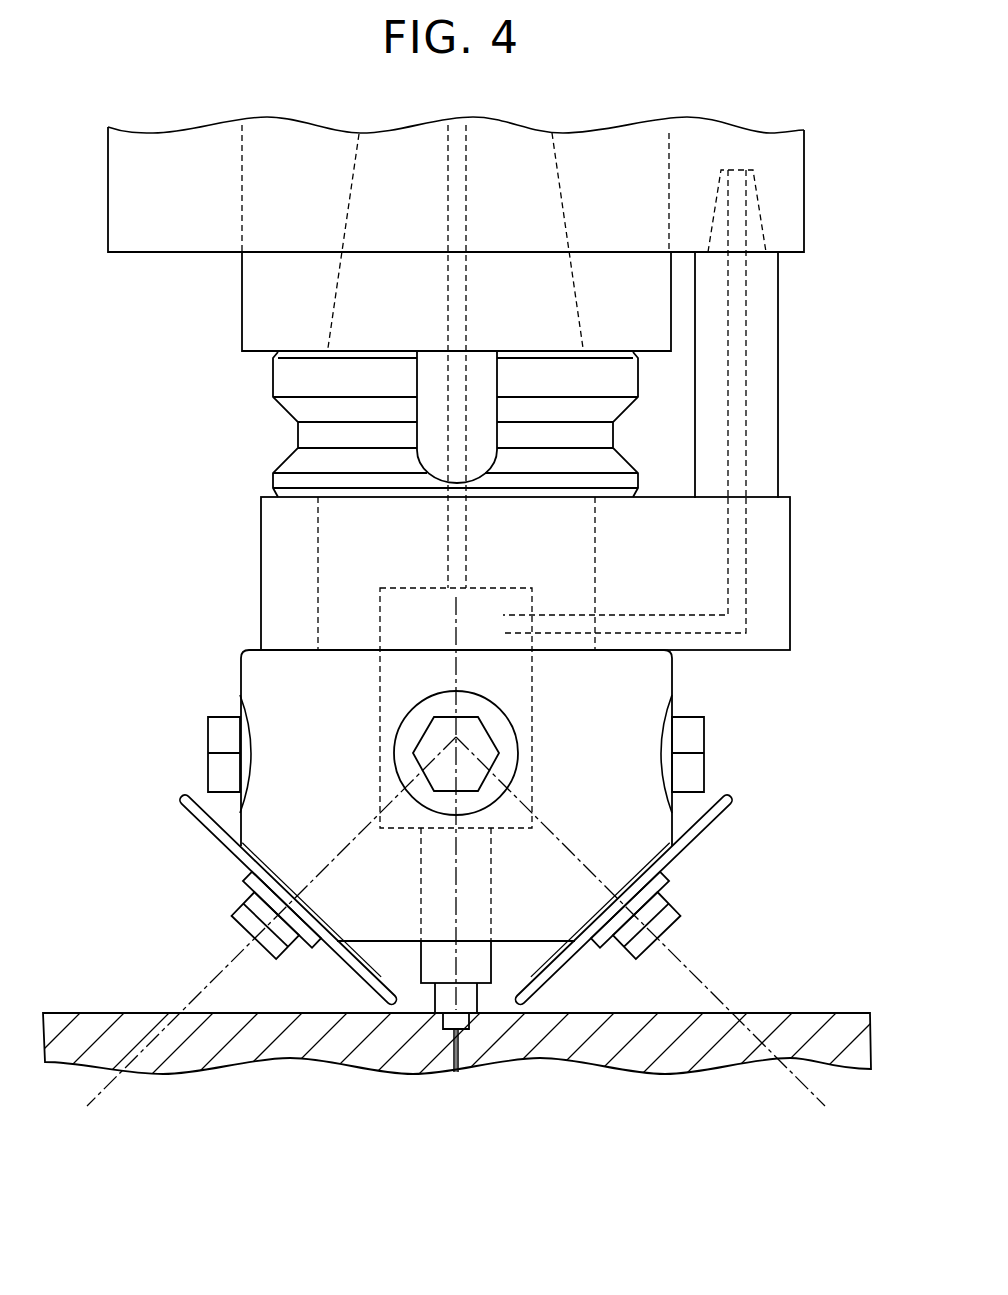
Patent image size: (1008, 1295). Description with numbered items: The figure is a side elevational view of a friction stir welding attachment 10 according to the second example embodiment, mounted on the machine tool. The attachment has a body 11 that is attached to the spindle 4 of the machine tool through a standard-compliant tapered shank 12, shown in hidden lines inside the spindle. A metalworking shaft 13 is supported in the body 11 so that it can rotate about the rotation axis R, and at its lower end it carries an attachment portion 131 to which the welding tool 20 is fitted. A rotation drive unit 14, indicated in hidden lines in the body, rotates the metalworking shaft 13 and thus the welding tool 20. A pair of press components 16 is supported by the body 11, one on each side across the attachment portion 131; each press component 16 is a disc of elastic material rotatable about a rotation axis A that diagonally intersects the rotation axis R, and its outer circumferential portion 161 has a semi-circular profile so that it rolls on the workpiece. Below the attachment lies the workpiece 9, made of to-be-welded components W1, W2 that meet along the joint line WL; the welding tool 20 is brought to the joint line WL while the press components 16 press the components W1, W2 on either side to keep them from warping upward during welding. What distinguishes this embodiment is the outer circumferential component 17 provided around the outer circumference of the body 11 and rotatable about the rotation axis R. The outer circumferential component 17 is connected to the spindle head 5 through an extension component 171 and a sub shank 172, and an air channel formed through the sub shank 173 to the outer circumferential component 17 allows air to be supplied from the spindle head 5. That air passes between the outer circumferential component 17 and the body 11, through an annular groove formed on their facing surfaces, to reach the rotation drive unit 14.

The spindle 4 is at (260, 330).
The spindle head 5 is at (155, 203).
The workpiece 9 is at (445, 1003).
The friction stir welding attachment 10 is at (108, 634).
The body 11 is at (253, 673).
The tapered shank 12 is at (330, 292).
The metalworking shaft 13 is at (485, 967).
The rotation drive unit 14 is at (500, 673).
The press component 16 is at (180, 798).
The outer circumferential component 17 is at (790, 545).
The welding tool 20 is at (443, 997).
The attachment portion 131 is at (477, 987).
The outer circumferential portion 161 is at (222, 843).
The extension component 171 is at (779, 327).
The sub shank 172 is at (760, 215).
The sub shank 173 is at (742, 604).
The rotation axis A is at (457, 931).
The rotation axis R is at (456, 623).
The to-be-welded component W1 is at (105, 1027).
The to-be-welded component W2 is at (827, 1022).
The joint line WL is at (463, 1063).